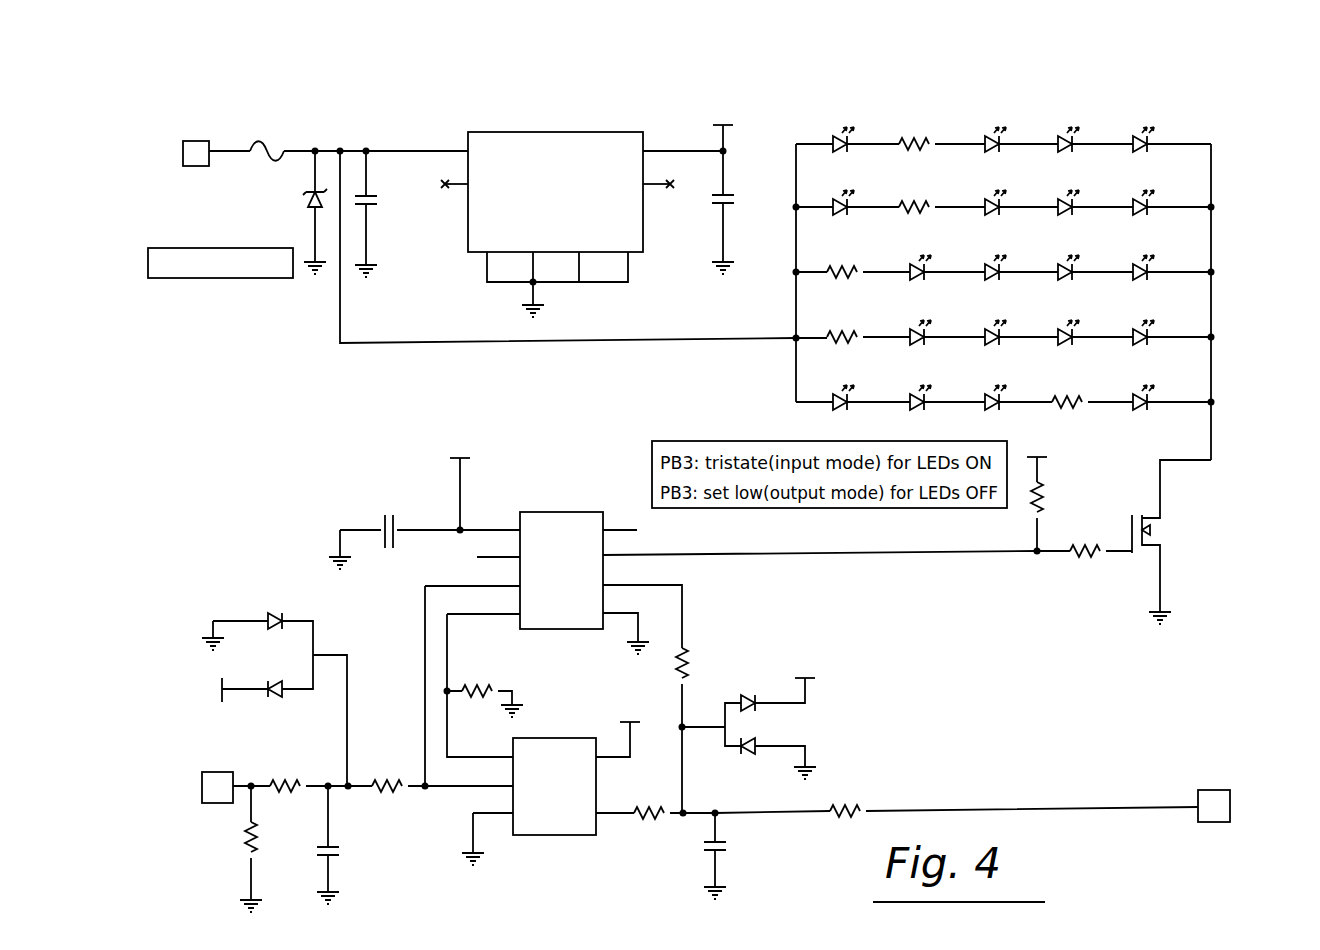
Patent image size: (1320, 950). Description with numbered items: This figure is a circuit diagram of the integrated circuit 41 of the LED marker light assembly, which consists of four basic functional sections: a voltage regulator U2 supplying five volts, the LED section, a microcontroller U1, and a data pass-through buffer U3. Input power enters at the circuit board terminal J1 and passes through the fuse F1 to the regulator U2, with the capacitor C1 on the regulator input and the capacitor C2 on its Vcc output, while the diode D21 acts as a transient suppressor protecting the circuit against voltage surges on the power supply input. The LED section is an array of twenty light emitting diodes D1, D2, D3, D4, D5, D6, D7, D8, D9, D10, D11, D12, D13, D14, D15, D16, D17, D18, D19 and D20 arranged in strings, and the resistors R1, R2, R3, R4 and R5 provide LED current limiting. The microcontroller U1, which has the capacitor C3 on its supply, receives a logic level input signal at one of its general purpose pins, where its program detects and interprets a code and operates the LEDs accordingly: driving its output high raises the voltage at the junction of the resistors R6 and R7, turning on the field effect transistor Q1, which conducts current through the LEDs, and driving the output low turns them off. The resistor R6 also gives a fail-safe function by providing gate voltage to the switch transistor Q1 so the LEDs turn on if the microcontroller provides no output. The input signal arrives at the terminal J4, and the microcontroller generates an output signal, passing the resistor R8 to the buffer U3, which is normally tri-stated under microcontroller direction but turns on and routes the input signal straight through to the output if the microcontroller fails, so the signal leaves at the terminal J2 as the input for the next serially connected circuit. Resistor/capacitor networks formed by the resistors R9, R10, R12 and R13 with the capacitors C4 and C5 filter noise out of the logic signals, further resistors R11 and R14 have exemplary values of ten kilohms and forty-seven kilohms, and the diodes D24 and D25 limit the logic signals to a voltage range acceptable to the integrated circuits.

The integrated circuit 41 is at (1012, 261).
The circuit board input terminal J1 is at (195, 157).
The fuse F1 is at (264, 140).
The transient suppressor diode D21 is at (237, 214).
The capacitor C1 is at (374, 214).
The voltage regulator U2 is at (582, 211).
The capacitor C2 is at (731, 189).
The light emitting diode D1 is at (832, 132).
The light emitting diode D2 is at (984, 132).
The light emitting diode D3 is at (1057, 132).
The light emitting diode D4 is at (1132, 132).
The light emitting diode D5 is at (832, 195).
The light emitting diode D6 is at (984, 195).
The light emitting diode D7 is at (1057, 195).
The light emitting diode D8 is at (1132, 195).
The light emitting diode D9 is at (909, 260).
The light emitting diode D10 is at (980, 260).
The light emitting diode D11 is at (1053, 260).
The light emitting diode D12 is at (1128, 260).
The light emitting diode D13 is at (905, 325).
The light emitting diode D14 is at (980, 325).
The light emitting diode D15 is at (1053, 325).
The light emitting diode D16 is at (1128, 325).
The light emitting diode D17 is at (829, 390).
The light emitting diode D18 is at (905, 390).
The light emitting diode D19 is at (980, 390).
The light emitting diode D20 is at (1128, 390).
The current limiting resistor R1 is at (914, 133).
The current limiting resistor R2 is at (914, 196).
The current limiting resistor R3 is at (842, 261).
The current limiting resistor R4 is at (842, 326).
The current limiting resistor R5 is at (1067, 391).
The resistor R6 is at (1046, 496).
The resistor R7 is at (1084, 541).
The field effect transistor Q1 is at (1190, 542).
The microcontroller U1 is at (757, 574).
The capacitor C3 is at (424, 503).
The resistor R8 is at (658, 699).
The resistor R11 is at (484, 693).
The diode D24 is at (256, 683).
The circuit board input terminal J4 is at (214, 791).
The resistor R13 is at (285, 776).
The resistor R14 is at (267, 849).
The capacitor C4 is at (352, 845).
The resistor R12 is at (387, 776).
The data pass-through buffer U3 is at (554, 795).
The resistor R9 is at (649, 803).
The resistor R10 is at (848, 801).
The capacitor C5 is at (726, 856).
The circuit board output terminal J2 is at (1211, 809).
The diode D25 is at (748, 721).